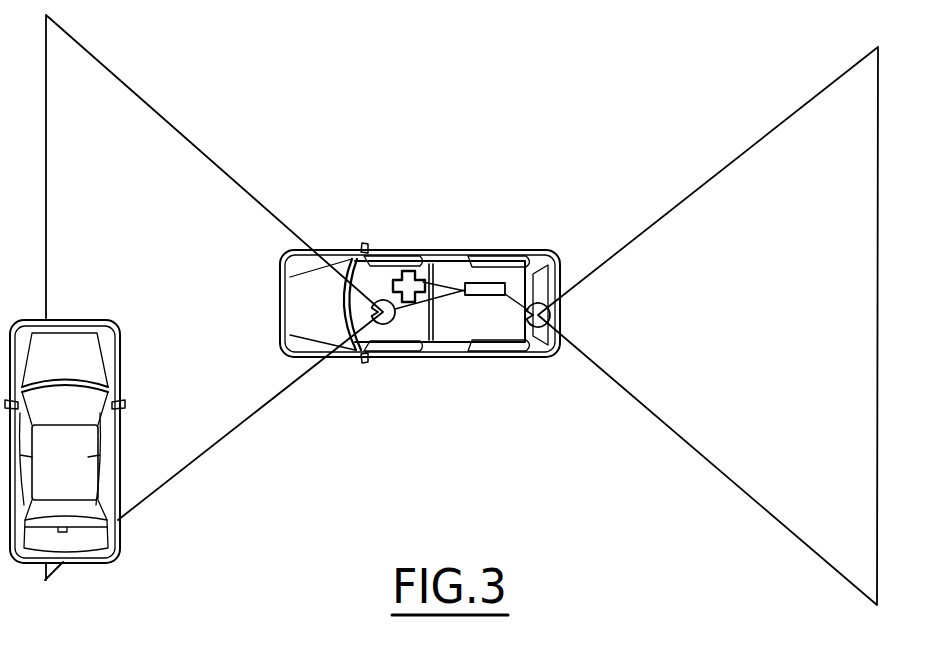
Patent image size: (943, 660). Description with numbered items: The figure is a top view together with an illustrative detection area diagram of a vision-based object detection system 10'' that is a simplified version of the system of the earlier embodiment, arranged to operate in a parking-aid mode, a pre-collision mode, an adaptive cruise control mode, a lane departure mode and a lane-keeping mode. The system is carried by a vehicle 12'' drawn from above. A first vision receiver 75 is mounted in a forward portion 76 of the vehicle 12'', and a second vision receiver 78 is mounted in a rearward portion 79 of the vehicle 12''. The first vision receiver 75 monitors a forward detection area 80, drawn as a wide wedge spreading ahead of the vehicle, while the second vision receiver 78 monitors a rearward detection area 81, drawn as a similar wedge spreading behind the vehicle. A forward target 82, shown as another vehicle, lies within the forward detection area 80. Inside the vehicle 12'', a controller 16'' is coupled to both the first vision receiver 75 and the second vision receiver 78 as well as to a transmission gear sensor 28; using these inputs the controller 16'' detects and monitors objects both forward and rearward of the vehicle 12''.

The vision-based object detection system 10'' is at (462, 306).
The vehicle 12'' is at (338, 266).
The controller 16'' is at (495, 239).
The transmission gear sensor 28 is at (409, 270).
The first vision receiver 75 is at (388, 326).
The forward portion 76 is at (332, 366).
The second vision receiver 78 is at (552, 312).
The rearward portion 79 is at (543, 368).
The forward detection area 80 is at (182, 131).
The rearward detection area 81 is at (745, 150).
The forward target 82 is at (121, 359).